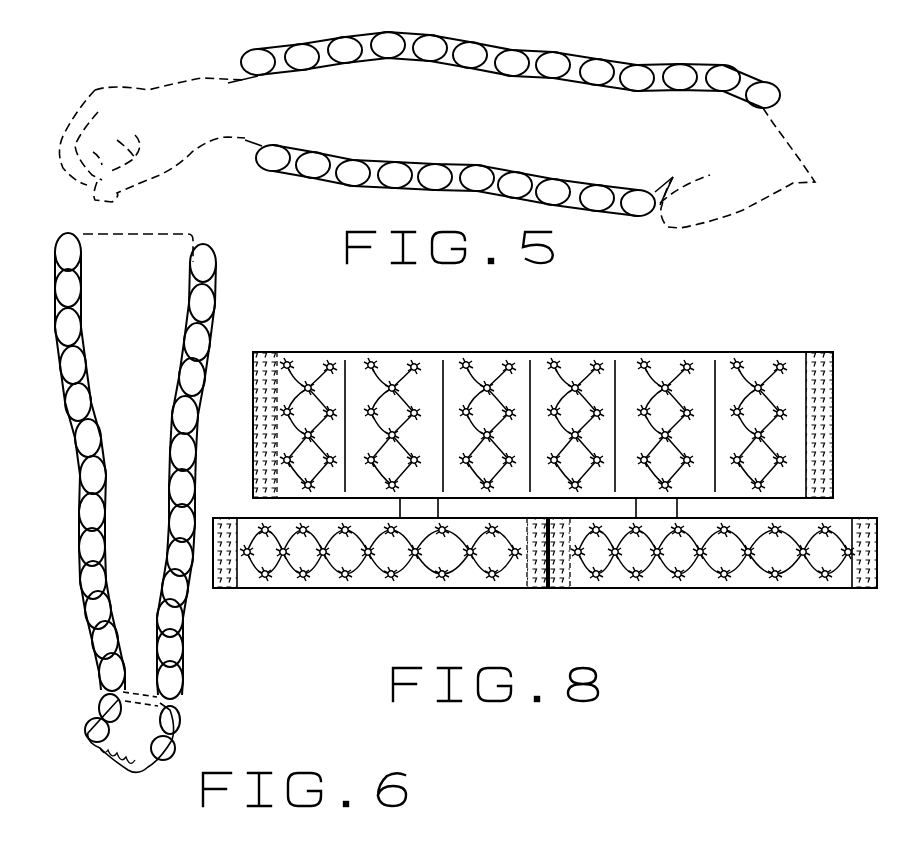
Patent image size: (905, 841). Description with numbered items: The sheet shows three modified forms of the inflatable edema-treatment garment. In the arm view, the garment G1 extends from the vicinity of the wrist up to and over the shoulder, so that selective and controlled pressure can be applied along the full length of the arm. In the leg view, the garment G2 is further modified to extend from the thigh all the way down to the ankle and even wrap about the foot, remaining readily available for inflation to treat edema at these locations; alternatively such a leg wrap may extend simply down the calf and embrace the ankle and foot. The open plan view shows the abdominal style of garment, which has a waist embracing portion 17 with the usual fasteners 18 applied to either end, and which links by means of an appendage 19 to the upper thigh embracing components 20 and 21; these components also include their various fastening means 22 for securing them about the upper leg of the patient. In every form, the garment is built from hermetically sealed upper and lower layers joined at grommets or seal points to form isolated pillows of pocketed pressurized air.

In FIG. 5, the garment G1 is at (635, 65).
In FIG. 6, the garment G2 is at (72, 508).
In FIG. 8, the waist embracing portion 17 is at (670, 361).
In FIG. 8, the fasteners 18 is at (265, 352).
In FIG. 8, the appendage 19 is at (548, 518).
In FIG. 8, the upper thigh embracing component 20 is at (422, 588).
In FIG. 8, the upper thigh embracing component 21 is at (763, 588).
In FIG. 8, the fastening means 22 is at (225, 588).